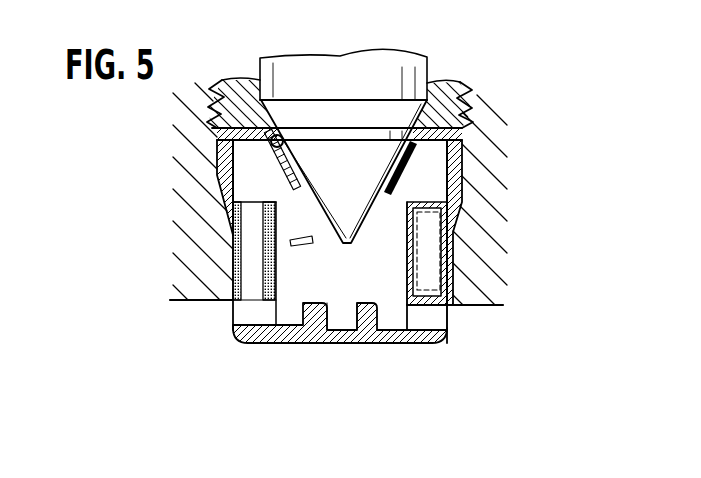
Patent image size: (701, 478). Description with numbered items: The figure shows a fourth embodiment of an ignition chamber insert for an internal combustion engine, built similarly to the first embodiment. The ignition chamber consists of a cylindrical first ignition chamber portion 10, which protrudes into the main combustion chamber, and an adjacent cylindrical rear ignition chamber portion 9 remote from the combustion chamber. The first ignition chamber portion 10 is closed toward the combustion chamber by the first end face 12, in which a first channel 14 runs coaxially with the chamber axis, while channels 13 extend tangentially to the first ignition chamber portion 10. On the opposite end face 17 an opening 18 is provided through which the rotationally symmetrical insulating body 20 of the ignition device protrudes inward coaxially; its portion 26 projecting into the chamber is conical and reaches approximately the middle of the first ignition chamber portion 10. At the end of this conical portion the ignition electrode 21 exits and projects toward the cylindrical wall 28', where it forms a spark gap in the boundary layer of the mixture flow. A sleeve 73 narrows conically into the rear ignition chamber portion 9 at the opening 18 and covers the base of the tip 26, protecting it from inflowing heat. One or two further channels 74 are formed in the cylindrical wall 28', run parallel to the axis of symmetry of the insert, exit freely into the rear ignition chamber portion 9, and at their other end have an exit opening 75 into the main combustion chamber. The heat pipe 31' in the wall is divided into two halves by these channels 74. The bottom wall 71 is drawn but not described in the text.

The insulating body 20 is at (337, 146).
The conical portion of the insulating body 26 is at (352, 171).
The end face of the insert 17 is at (218, 136).
The opening 18 is at (240, 155).
The rear ignition chamber portion 9 is at (218, 168).
The sleeve 73 is at (410, 158).
The further channels 74 is at (236, 252).
The cylindrical wall 28' is at (203, 263).
The exit opening 75 is at (250, 304).
The first end face 12 is at (284, 344).
The first channel 14 is at (341, 327).
The bottom wall 71 is at (414, 348).
The channels 13 is at (433, 322).
The first ignition chamber portion 10 is at (385, 275).
The heat pipe 31' is at (486, 251).
The ignition electrode 21 is at (303, 246).